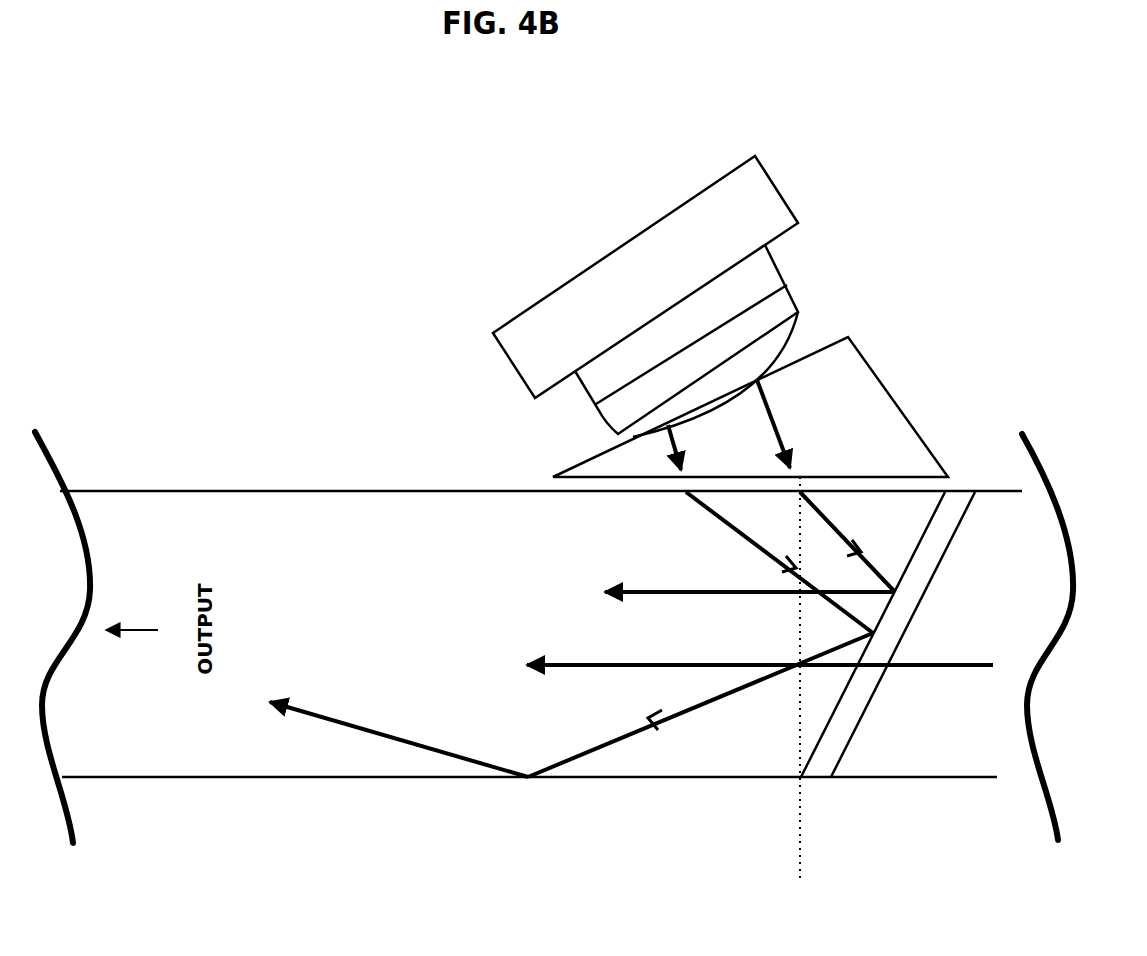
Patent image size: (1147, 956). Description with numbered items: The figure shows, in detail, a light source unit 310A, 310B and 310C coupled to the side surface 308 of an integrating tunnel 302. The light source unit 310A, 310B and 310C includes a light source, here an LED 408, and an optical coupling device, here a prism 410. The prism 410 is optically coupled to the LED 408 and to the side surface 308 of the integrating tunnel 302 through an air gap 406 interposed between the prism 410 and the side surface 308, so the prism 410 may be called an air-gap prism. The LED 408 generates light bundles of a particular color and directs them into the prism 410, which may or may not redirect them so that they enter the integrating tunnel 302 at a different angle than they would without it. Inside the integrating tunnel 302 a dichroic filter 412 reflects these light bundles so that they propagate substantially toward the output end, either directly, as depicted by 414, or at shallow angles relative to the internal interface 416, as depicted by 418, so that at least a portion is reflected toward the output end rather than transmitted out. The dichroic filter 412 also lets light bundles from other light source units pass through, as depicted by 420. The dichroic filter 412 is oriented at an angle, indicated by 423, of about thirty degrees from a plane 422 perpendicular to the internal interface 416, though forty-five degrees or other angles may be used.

The integrating tunnel 302 is at (459, 641).
The side surface 308 is at (193, 484).
The light source unit 310A is at (717, 274).
The light source unit 310B is at (717, 274).
The light source unit 310C is at (717, 274).
The air gap 406 is at (976, 473).
The LED 408 is at (755, 222).
The prism 410 is at (768, 399).
The dichroic filter 412 is at (927, 592).
The light bundles propagating directly toward output end 414 is at (658, 592).
The internal interface 416 is at (300, 500).
The light bundles at shallow angles 418 is at (560, 758).
The light bundles passing through 420 is at (633, 665).
The plane 422 is at (803, 827).
The angle 423 is at (818, 712).